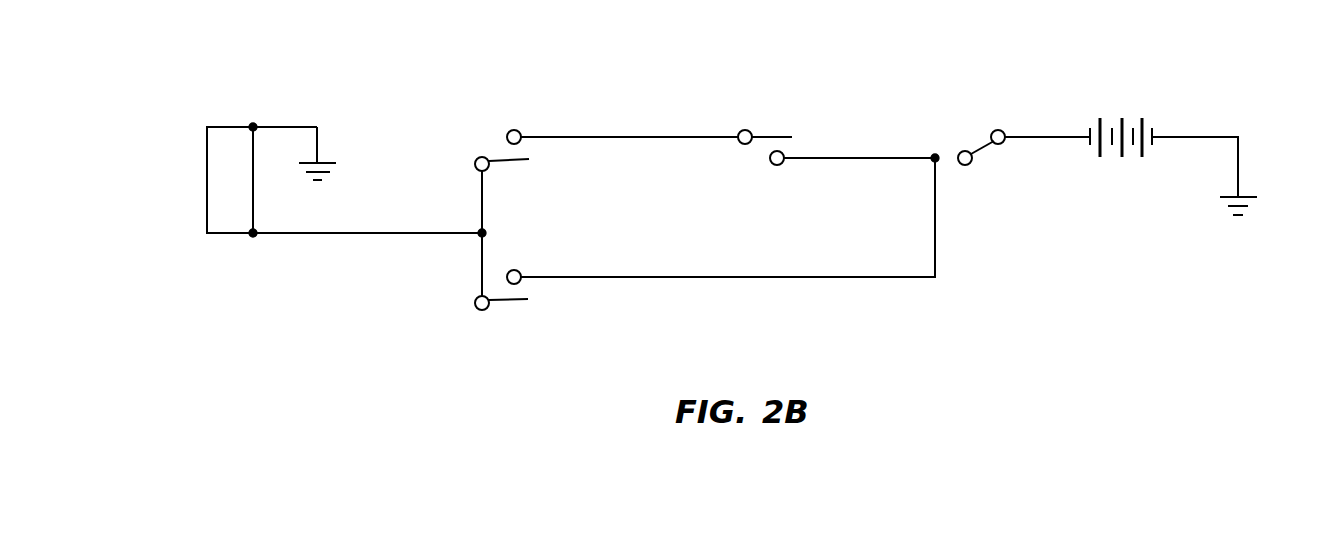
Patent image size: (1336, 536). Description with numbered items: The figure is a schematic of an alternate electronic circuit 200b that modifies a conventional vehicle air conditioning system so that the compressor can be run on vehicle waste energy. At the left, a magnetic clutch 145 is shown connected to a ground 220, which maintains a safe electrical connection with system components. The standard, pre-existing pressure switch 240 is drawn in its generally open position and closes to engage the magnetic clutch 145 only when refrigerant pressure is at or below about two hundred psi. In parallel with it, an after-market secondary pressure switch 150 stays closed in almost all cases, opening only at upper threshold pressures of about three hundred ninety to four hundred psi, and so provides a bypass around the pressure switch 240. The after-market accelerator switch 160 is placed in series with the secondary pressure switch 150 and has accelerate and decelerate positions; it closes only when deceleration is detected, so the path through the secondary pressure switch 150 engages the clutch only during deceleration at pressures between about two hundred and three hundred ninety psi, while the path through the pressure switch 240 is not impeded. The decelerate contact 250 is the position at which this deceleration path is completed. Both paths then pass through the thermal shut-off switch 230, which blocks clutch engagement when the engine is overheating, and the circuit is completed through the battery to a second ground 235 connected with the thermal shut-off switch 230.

The magnetic clutch 145 is at (196, 176).
The ground 220 is at (330, 160).
The secondary pressure switch 150 is at (488, 142).
The accelerator switch 160 is at (708, 70).
The decelerate contact 250 is at (758, 164).
The thermal shut-off switch 230 is at (1001, 164).
The ground 235 is at (1249, 197).
The pressure switch 240 is at (507, 306).
The electronic circuit 200b is at (845, 335).